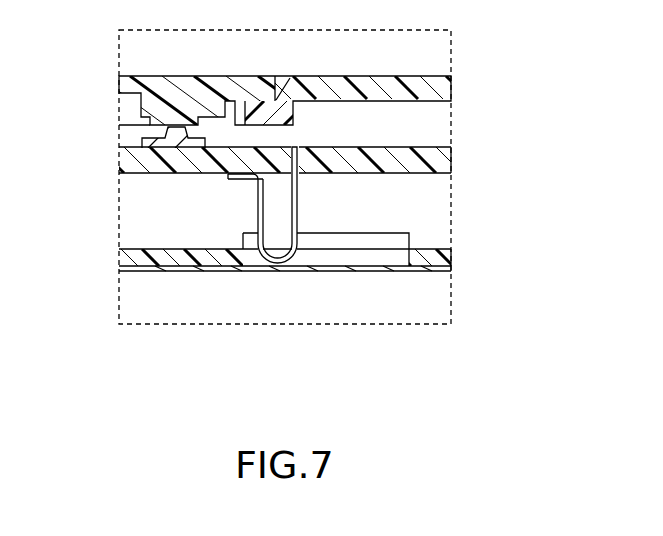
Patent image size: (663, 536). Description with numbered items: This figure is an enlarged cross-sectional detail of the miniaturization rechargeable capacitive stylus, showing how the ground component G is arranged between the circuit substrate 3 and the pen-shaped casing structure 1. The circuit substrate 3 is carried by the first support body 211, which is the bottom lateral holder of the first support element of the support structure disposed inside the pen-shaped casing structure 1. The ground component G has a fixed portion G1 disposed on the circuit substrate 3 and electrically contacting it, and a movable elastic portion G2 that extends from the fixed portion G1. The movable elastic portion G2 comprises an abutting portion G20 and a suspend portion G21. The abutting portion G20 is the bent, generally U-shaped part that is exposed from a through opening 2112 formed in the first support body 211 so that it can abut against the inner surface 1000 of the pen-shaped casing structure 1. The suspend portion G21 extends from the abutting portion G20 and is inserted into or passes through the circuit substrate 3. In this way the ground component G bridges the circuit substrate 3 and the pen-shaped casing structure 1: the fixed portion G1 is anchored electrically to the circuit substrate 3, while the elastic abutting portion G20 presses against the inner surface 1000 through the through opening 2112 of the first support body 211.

The inner surface 1000 is at (137, 249).
The pen-shaped casing structure 1 is at (272, 314).
The first support body 211 is at (180, 259).
The through opening 2112 is at (363, 257).
The circuit substrate 3 is at (438, 146).
The ground component G is at (270, 277).
The fixed portion G1 is at (239, 180).
The movable elastic portion G2 is at (310, 277).
The abutting portion G20 is at (276, 266).
The suspend portion G21 is at (299, 170).